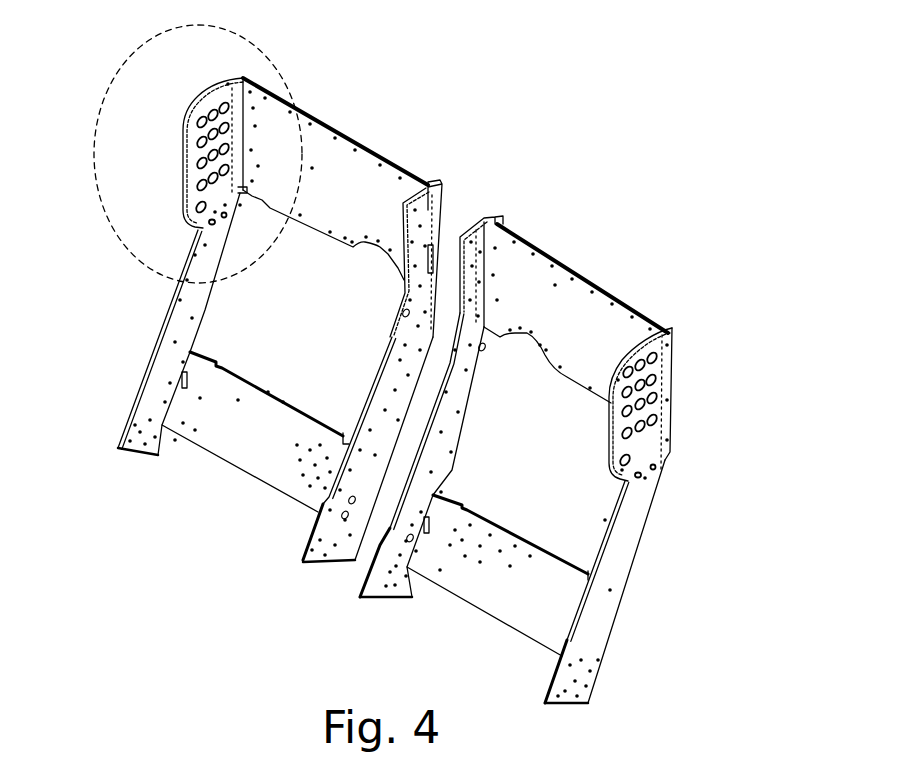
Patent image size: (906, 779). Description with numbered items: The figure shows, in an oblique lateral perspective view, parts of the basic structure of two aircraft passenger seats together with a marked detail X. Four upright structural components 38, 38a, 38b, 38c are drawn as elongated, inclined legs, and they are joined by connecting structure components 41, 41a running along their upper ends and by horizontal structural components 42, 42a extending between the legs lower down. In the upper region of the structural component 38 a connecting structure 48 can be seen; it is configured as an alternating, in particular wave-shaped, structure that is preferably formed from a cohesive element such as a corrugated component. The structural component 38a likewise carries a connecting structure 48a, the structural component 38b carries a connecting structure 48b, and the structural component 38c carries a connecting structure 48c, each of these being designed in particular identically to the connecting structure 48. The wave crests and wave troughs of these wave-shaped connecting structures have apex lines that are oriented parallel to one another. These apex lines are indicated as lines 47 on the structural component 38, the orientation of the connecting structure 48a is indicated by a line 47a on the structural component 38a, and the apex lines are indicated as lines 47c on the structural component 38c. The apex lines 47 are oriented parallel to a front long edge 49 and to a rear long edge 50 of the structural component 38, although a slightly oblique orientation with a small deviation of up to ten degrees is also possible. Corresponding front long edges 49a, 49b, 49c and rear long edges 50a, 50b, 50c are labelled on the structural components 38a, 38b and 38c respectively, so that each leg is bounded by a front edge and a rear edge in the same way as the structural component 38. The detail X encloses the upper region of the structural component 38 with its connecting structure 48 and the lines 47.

The detail X is at (272, 58).
The structural component 38 is at (158, 363).
The structural component 38a is at (387, 337).
The structural component 38b is at (463, 407).
The structural component 38c is at (632, 533).
The connecting structure component 41 is at (357, 160).
The connecting structure component 41a is at (543, 270).
The horizontal structural component 42 is at (233, 447).
The horizontal structural component 42a is at (493, 600).
The lines 47 is at (198, 174).
The line 47a is at (430, 223).
The lines 47c is at (675, 347).
The connecting structure 48 is at (208, 92).
The connecting structure 48a is at (430, 180).
The connecting structure 48b is at (483, 217).
The connecting structure 48c is at (673, 325).
The front long edge 49 is at (162, 295).
The leg rail 49a is at (364, 390).
The leg rail 49b is at (358, 587).
The leg rail 49c is at (598, 540).
The rear long edge 50 is at (215, 298).
The leg edge 50a is at (413, 407).
The leg edge 50b is at (457, 470).
The leg edge 50c is at (635, 583).